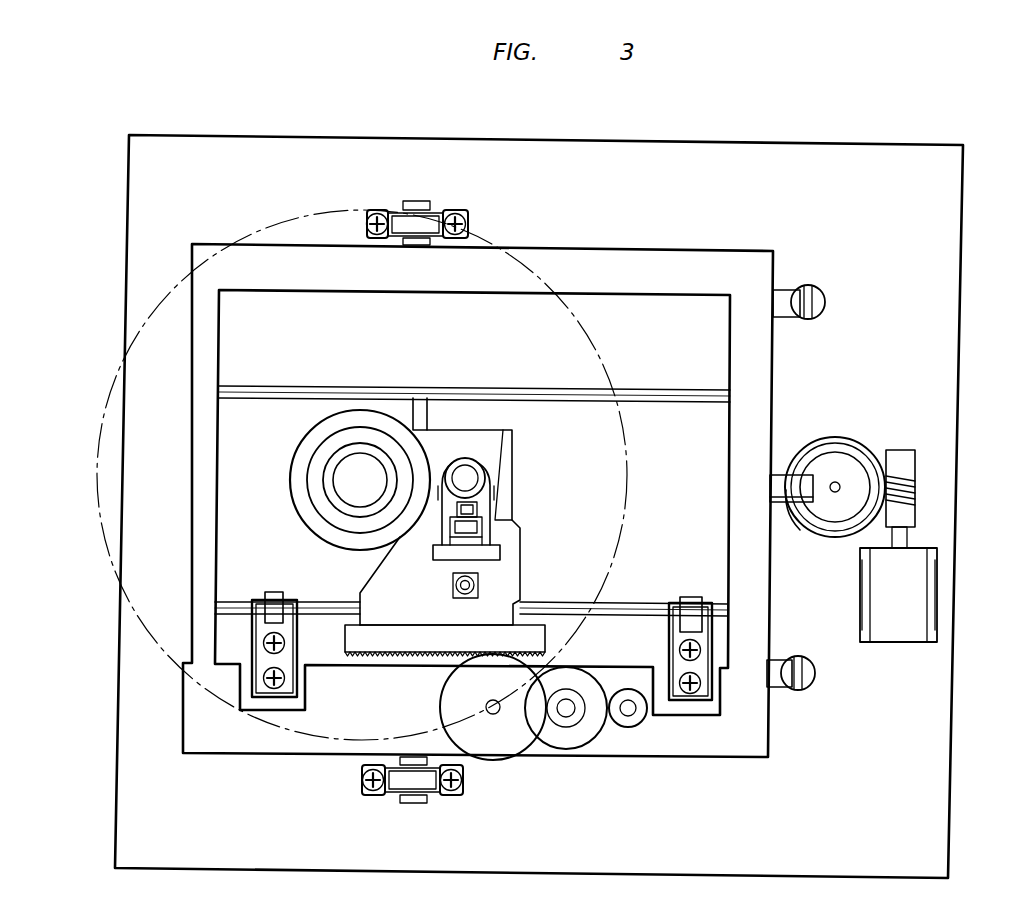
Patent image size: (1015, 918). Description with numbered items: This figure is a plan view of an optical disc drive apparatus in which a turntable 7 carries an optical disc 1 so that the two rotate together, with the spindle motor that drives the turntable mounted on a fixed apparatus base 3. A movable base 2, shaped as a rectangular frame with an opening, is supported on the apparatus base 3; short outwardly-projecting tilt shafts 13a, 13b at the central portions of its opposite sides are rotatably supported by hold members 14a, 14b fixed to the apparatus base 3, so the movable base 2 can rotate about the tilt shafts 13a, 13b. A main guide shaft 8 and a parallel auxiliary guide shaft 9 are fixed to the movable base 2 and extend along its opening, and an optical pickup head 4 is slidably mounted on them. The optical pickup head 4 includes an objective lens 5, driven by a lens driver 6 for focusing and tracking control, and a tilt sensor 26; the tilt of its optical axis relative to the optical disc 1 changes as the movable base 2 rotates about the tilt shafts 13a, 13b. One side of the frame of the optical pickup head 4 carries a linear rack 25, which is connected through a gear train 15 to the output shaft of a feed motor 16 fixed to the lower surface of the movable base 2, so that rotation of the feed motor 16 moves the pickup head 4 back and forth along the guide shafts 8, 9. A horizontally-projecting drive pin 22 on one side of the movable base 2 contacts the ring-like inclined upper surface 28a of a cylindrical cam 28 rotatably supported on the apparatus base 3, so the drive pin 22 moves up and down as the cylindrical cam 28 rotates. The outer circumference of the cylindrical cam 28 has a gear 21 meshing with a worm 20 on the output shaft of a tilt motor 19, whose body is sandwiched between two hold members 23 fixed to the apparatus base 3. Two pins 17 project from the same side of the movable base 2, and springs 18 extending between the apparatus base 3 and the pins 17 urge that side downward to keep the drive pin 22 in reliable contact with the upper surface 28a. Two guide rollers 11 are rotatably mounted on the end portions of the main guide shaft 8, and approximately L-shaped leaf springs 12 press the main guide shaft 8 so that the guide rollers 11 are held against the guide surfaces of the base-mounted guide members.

The optical disc 1 is at (112, 362).
The movable base 2 is at (688, 262).
The apparatus base 3 is at (830, 160).
The optical pickup head 4 is at (518, 548).
The objective lens 5 is at (466, 458).
The lens driver 6 is at (500, 520).
The turntable 7 is at (338, 436).
The main guide shaft 8 is at (620, 604).
The auxiliary guide shaft 9 is at (710, 393).
The guide roller 11 is at (275, 598).
The leaf spring 12 is at (277, 705).
The tilt shaft 13a is at (408, 804).
The tilt shaft 13b is at (420, 205).
The hold member 14a is at (428, 797).
The hold member 14b is at (398, 228).
The gear train 15 is at (633, 772).
The feed motor 16 is at (645, 724).
The pin 17 is at (785, 300).
The spring 18 is at (827, 302).
The tilt motor 19 is at (893, 642).
The worm 20 is at (914, 456).
The gear 21 is at (900, 450).
The drive pin 22 is at (790, 472).
The hold member 23 is at (858, 597).
The rack 25 is at (377, 630).
The tilt sensor 26 is at (480, 585).
The cylindrical cam 28 is at (838, 440).
The upper surface 28a is at (818, 520).